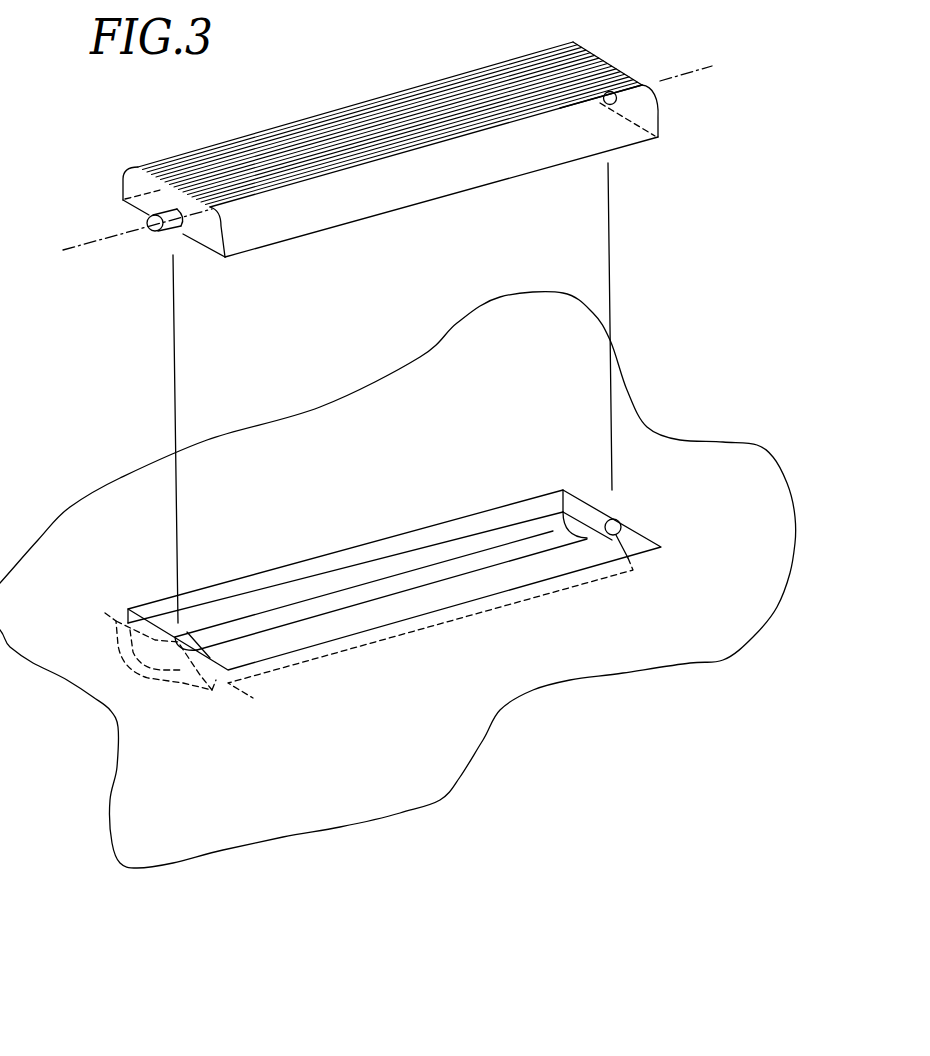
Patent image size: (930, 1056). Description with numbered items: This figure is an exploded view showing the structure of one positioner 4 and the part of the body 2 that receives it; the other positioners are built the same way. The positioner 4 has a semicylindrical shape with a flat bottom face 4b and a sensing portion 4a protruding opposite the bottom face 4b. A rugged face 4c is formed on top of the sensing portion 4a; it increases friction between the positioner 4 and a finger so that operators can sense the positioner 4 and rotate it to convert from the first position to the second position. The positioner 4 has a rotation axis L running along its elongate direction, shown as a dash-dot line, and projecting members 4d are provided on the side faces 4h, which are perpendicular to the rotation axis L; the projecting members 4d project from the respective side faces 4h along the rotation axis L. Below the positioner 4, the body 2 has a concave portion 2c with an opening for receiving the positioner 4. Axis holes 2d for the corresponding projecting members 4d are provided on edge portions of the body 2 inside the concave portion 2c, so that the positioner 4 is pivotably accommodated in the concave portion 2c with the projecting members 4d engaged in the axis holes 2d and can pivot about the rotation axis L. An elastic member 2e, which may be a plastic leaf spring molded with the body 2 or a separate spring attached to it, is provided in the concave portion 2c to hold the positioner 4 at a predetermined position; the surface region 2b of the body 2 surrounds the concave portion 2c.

The body 2 is at (692, 423).
The base surface 2b is at (657, 655).
The concave portion 2c is at (520, 508).
The axis holes 2d is at (619, 526).
The elastic member 2e is at (440, 577).
The positioner 4 is at (393, 84).
The sensing portion 4a is at (607, 64).
The bottom face 4b is at (447, 190).
The rugged face 4c is at (272, 135).
The projecting members 4d is at (168, 233).
The side faces 4h is at (132, 185).
The rotation axis L is at (113, 234).